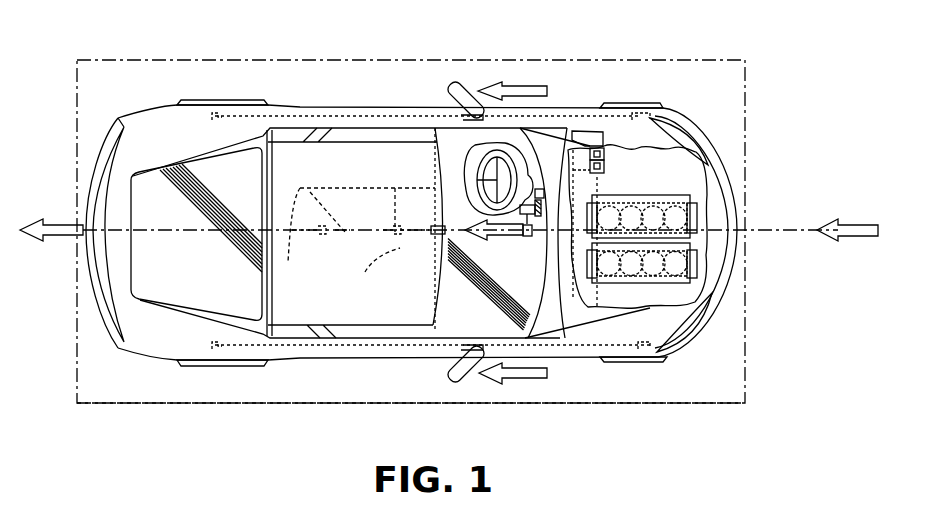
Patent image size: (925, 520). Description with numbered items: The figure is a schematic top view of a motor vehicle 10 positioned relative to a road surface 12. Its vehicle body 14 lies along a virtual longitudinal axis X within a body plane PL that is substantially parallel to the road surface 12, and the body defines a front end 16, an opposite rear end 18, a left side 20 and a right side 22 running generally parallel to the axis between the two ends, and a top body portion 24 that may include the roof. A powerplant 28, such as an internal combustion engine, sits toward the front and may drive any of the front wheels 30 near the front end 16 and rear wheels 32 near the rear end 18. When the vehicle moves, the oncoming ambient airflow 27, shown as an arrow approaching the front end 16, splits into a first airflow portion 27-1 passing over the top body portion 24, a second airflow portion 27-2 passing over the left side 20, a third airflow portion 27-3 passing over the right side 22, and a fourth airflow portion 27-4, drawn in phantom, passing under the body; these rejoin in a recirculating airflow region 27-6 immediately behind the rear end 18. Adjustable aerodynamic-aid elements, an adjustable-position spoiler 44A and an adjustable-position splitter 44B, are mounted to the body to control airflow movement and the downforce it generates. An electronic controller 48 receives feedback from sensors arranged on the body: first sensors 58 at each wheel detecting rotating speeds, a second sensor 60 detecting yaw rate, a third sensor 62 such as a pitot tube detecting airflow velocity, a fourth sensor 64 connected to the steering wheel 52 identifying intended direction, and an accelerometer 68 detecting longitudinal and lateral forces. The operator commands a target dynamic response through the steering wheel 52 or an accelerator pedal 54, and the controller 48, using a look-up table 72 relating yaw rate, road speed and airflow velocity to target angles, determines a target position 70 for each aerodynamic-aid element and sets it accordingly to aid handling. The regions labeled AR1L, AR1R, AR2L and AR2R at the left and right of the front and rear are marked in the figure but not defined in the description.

The motor vehicle 10 is at (727, 371).
The road surface 12 is at (390, 276).
The vehicle body 14 is at (370, 150).
The front end 16 is at (722, 183).
The rear end 18 is at (88, 208).
The left side 20 is at (430, 112).
The right side 22 is at (413, 357).
The top body portion 24 is at (366, 229).
The ambient airflow 27 is at (858, 228).
The first airflow portion 27-1 is at (510, 238).
The second airflow portion 27-2 is at (522, 82).
The third airflow portion 27-3 is at (530, 380).
The fourth airflow portion 27-4 is at (302, 188).
The recirculating airflow region 27-6 is at (62, 236).
The powerplant 28 is at (684, 190).
The front wheels 30 is at (668, 128).
The rear wheels 32 is at (190, 101).
The adjustable-position spoiler 44A is at (100, 297).
The adjustable-position splitter 44B is at (738, 265).
The electronic controller 48 is at (600, 146).
The steering wheel 52 is at (470, 182).
The accelerator pedal 54 is at (527, 237).
The first sensors 58 is at (222, 113).
The second sensor 60 is at (296, 250).
The third sensor 62 is at (433, 240).
The fourth sensor 64 is at (540, 189).
The accelerometer 68 is at (373, 272).
The target position 70 is at (624, 150).
The look-up table 72 is at (604, 168).
The longitudinal axis X is at (795, 242).
The body plane PL is at (200, 405).
The front left region AR1L is at (683, 128).
The front right region AR1R is at (693, 340).
The rear left region AR2L is at (118, 118).
The rear right region AR2R is at (118, 350).